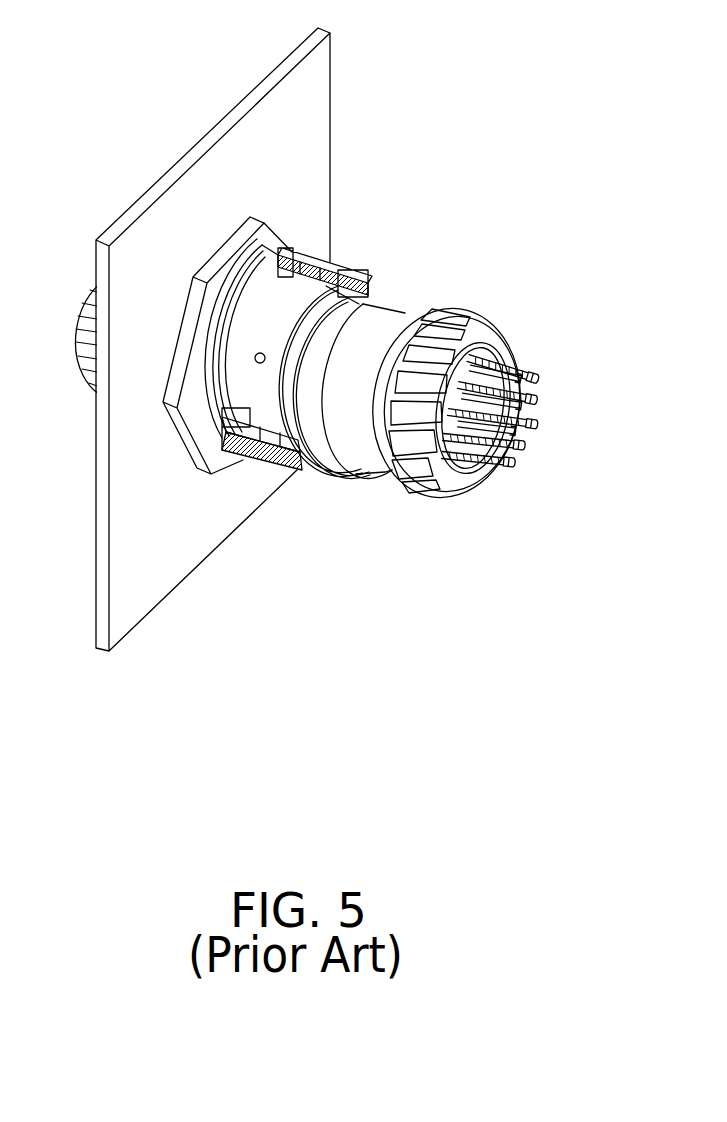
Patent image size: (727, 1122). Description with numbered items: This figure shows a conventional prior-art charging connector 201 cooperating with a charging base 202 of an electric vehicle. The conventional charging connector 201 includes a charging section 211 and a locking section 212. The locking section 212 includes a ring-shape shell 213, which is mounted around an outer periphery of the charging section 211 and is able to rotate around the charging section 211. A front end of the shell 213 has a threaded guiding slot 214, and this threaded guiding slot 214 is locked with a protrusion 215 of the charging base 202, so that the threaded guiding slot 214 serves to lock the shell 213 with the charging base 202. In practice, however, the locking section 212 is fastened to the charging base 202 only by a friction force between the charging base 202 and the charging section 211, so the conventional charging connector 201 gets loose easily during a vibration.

The conventional charging connector 201 is at (262, 297).
The charging base 202 is at (175, 222).
The charging section 211 is at (468, 293).
The locking section 212 is at (358, 268).
The ring-shape shell 213 is at (302, 480).
The threaded guiding slot 214 is at (309, 266).
The protrusion 215 is at (261, 364).